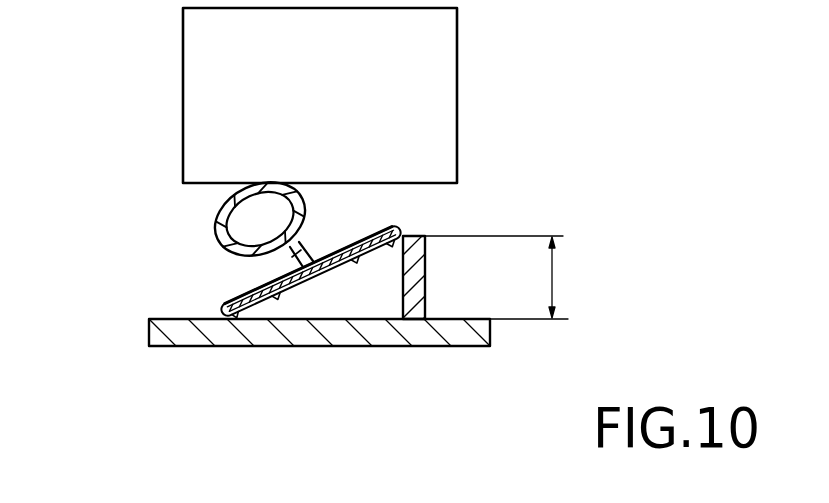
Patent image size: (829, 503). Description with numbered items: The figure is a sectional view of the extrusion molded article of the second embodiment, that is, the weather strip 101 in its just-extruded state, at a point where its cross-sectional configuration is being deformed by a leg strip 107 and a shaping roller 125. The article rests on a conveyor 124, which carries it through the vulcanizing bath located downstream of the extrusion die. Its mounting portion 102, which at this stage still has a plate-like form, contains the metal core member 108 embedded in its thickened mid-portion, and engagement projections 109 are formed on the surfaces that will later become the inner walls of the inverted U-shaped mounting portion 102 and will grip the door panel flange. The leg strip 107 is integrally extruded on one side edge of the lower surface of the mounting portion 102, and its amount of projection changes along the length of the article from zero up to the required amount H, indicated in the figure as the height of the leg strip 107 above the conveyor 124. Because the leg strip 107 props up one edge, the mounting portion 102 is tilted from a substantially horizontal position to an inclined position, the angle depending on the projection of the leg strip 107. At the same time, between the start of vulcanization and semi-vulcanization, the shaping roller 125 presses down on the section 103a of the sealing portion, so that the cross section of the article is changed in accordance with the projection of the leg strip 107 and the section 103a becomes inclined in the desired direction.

The shaping roller 125 is at (437, 121).
The weather strip 101 is at (204, 210).
The section of the sealing portion 103a is at (218, 232).
The mounting portion 102 is at (363, 236).
The core member 108 is at (303, 285).
The engagement projections 109 is at (361, 261).
The leg strip 107 is at (411, 277).
The conveyor 124 is at (183, 335).
The required amount of projection H is at (550, 287).